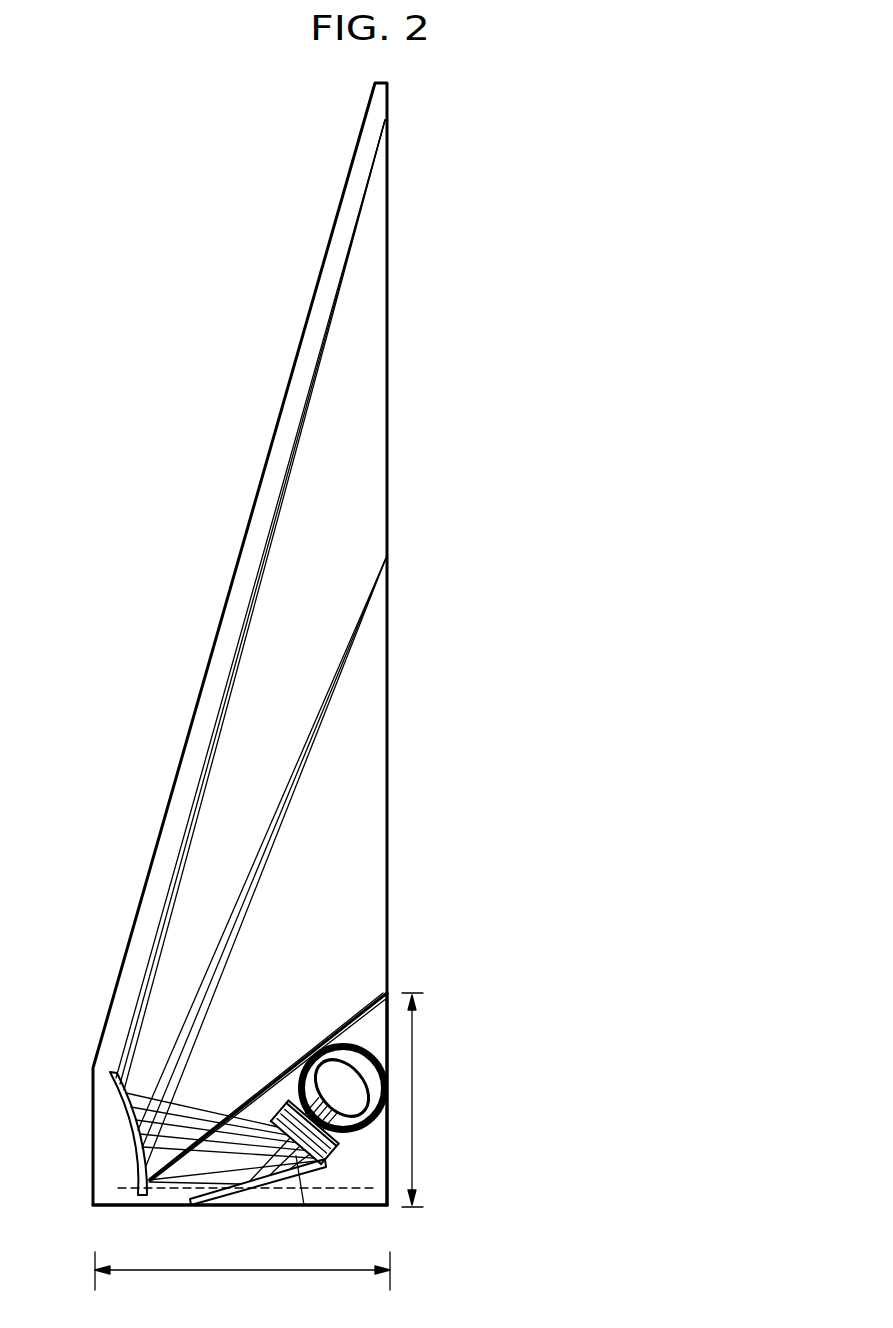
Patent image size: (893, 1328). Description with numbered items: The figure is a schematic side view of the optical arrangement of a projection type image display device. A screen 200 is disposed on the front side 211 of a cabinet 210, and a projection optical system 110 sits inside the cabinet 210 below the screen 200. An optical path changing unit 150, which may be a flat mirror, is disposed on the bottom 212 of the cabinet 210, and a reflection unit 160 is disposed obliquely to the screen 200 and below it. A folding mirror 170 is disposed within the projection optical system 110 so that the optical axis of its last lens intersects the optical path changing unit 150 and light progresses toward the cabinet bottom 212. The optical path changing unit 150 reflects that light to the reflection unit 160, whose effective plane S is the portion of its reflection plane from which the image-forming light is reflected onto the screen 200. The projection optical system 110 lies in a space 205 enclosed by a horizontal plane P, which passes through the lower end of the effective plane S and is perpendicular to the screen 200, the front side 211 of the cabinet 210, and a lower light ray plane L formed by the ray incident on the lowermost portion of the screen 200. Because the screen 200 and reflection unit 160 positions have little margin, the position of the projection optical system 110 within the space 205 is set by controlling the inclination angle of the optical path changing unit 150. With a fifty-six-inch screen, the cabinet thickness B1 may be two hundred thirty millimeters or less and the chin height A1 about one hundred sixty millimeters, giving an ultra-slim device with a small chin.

The screen 200 is at (388, 670).
The cabinet 210 is at (343, 1097).
The front side 211 is at (390, 1049).
The bottom 212 is at (388, 1210).
The space 205 is at (372, 1152).
The projection optical system 110 is at (297, 1072).
The optical path changing unit 150 is at (225, 1198).
The reflection unit 160 is at (122, 1098).
The folding mirror 170 is at (320, 1049).
The lower light ray plane L is at (362, 1010).
The effective plane S is at (137, 1157).
The horizontal plane P is at (354, 1190).
The height of the chin A1 is at (424, 1100).
The thickness of the cabinet B1 is at (242, 1276).